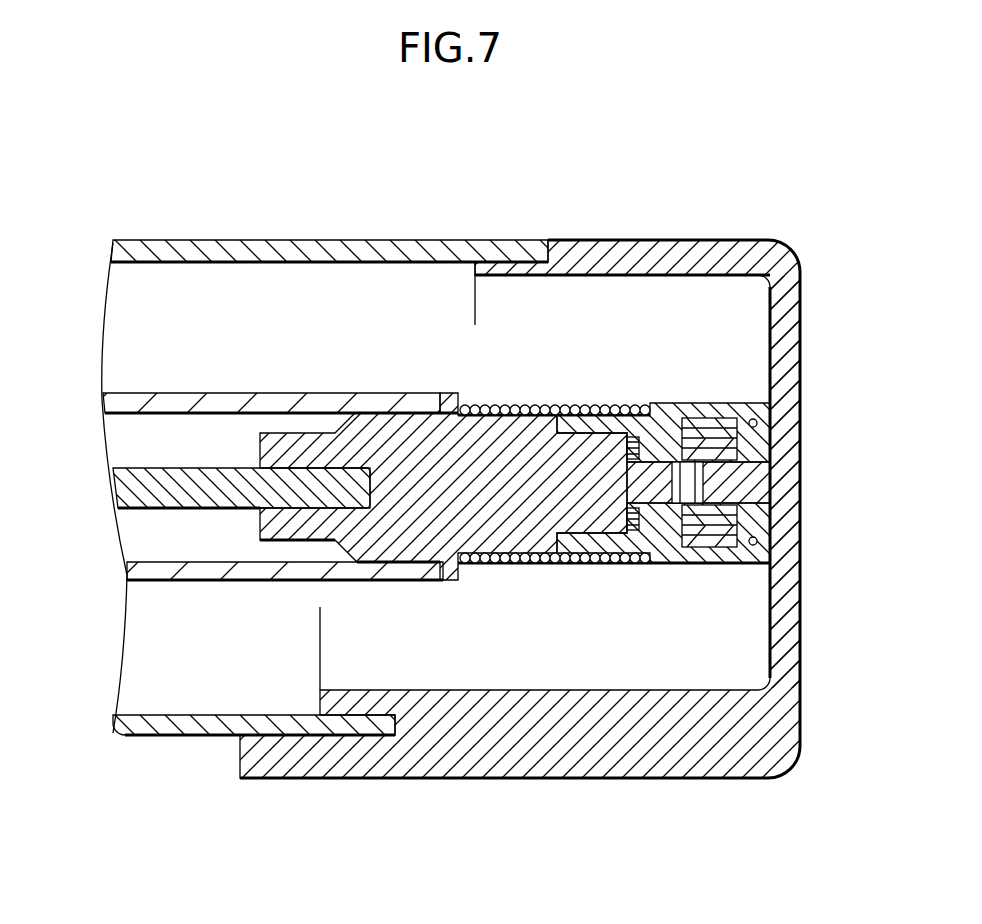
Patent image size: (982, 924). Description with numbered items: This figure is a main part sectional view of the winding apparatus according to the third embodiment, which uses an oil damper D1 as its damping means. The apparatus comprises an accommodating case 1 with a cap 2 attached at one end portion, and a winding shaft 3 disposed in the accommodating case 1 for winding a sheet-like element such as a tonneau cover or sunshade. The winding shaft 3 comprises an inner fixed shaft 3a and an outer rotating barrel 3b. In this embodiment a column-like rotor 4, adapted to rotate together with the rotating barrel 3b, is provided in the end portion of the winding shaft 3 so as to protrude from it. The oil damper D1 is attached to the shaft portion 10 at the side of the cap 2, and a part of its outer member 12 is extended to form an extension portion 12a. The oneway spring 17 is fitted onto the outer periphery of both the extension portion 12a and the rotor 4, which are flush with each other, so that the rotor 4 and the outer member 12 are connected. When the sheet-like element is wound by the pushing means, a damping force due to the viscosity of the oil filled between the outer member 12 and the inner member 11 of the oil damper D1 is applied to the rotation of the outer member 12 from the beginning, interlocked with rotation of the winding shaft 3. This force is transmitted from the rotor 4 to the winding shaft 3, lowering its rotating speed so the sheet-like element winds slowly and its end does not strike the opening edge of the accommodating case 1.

The accommodating case 1 is at (275, 248).
The cap 2 is at (663, 777).
The winding shaft 3 is at (244, 464).
The inner fixed shaft 3a is at (120, 487).
The outer rotating barrel 3b is at (110, 397).
The column-like rotor 4 is at (418, 548).
The shaft portion 10 is at (768, 485).
The inner member 11 is at (768, 447).
The outer member 12 is at (705, 402).
The extension portion 12a is at (600, 404).
The oneway spring 17 is at (520, 562).
The oil damper D1 is at (705, 567).